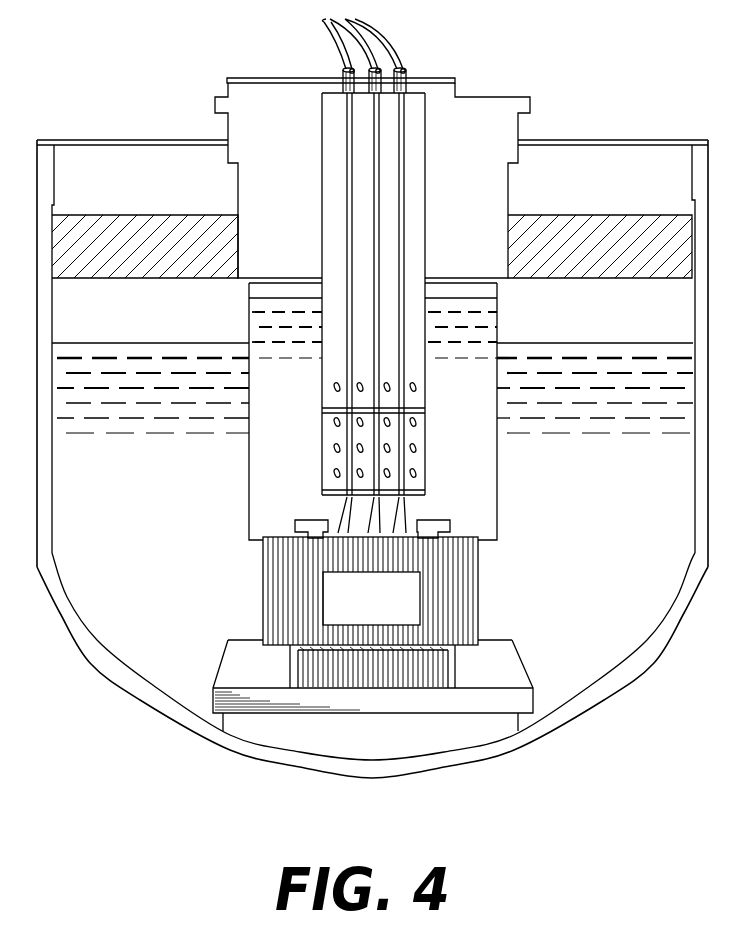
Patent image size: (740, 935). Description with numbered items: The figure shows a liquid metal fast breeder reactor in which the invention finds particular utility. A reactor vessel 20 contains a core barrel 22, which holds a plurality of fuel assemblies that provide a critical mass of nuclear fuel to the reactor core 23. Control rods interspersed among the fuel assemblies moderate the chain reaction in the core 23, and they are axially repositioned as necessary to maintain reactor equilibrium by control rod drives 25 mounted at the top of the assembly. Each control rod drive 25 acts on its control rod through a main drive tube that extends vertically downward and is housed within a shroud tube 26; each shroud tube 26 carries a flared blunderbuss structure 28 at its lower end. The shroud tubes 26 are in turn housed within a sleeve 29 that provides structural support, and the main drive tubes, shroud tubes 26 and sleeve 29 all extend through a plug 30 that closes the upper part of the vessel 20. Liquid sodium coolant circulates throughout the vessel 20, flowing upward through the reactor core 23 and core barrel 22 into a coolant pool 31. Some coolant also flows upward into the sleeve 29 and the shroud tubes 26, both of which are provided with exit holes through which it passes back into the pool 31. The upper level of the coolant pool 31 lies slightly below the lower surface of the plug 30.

The reactor vessel 20 is at (90, 663).
The core barrel 22 is at (297, 605).
The reactor core 23 is at (371, 598).
The control rod drives 25 is at (326, 21).
The shroud tube 26 is at (348, 358).
The flared blunderbuss structure 28 is at (419, 493).
The sleeve 29 is at (322, 464).
The plug 30 is at (197, 260).
The coolant pool 31 is at (294, 415).